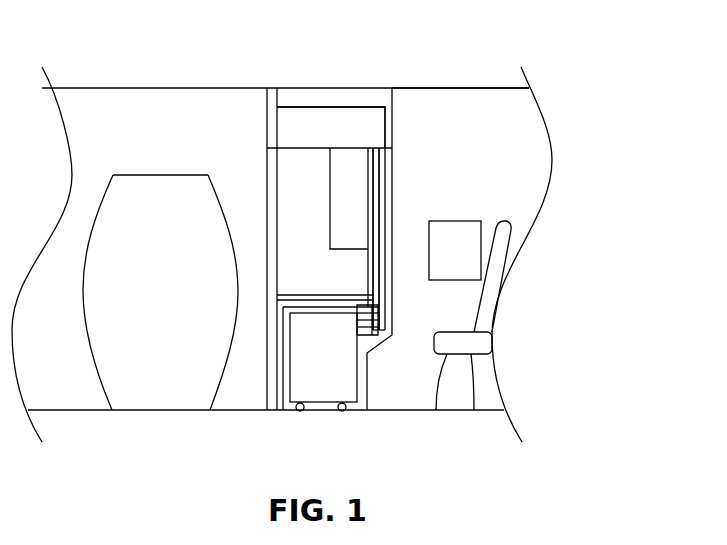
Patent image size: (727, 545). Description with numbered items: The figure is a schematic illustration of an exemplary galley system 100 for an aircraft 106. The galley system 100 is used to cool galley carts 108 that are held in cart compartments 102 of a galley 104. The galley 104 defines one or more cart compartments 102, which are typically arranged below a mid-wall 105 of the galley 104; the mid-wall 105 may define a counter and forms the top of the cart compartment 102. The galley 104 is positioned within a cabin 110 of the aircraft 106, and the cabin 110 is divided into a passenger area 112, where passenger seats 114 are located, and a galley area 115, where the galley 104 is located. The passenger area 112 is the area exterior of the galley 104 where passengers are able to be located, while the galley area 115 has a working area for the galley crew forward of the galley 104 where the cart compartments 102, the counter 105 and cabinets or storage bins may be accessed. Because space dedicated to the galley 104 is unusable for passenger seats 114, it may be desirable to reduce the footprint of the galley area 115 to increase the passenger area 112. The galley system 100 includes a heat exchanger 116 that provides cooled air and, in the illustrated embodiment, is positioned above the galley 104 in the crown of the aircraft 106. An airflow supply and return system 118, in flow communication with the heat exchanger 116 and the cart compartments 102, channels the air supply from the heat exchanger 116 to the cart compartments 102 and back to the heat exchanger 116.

The galley system 100 is at (311, 30).
The cart compartment 102 is at (362, 405).
The galley 104 is at (264, 305).
The mid-wall 105 is at (318, 300).
The aircraft 106 is at (162, 88).
The galley cart 108 is at (315, 389).
The cabin 110 is at (470, 132).
The passenger area 112 is at (522, 185).
The passenger seat 114 is at (491, 304).
The galley area 115 is at (304, 187).
The heat exchanger 116 is at (350, 88).
The airflow supply and return system 118 is at (384, 212).